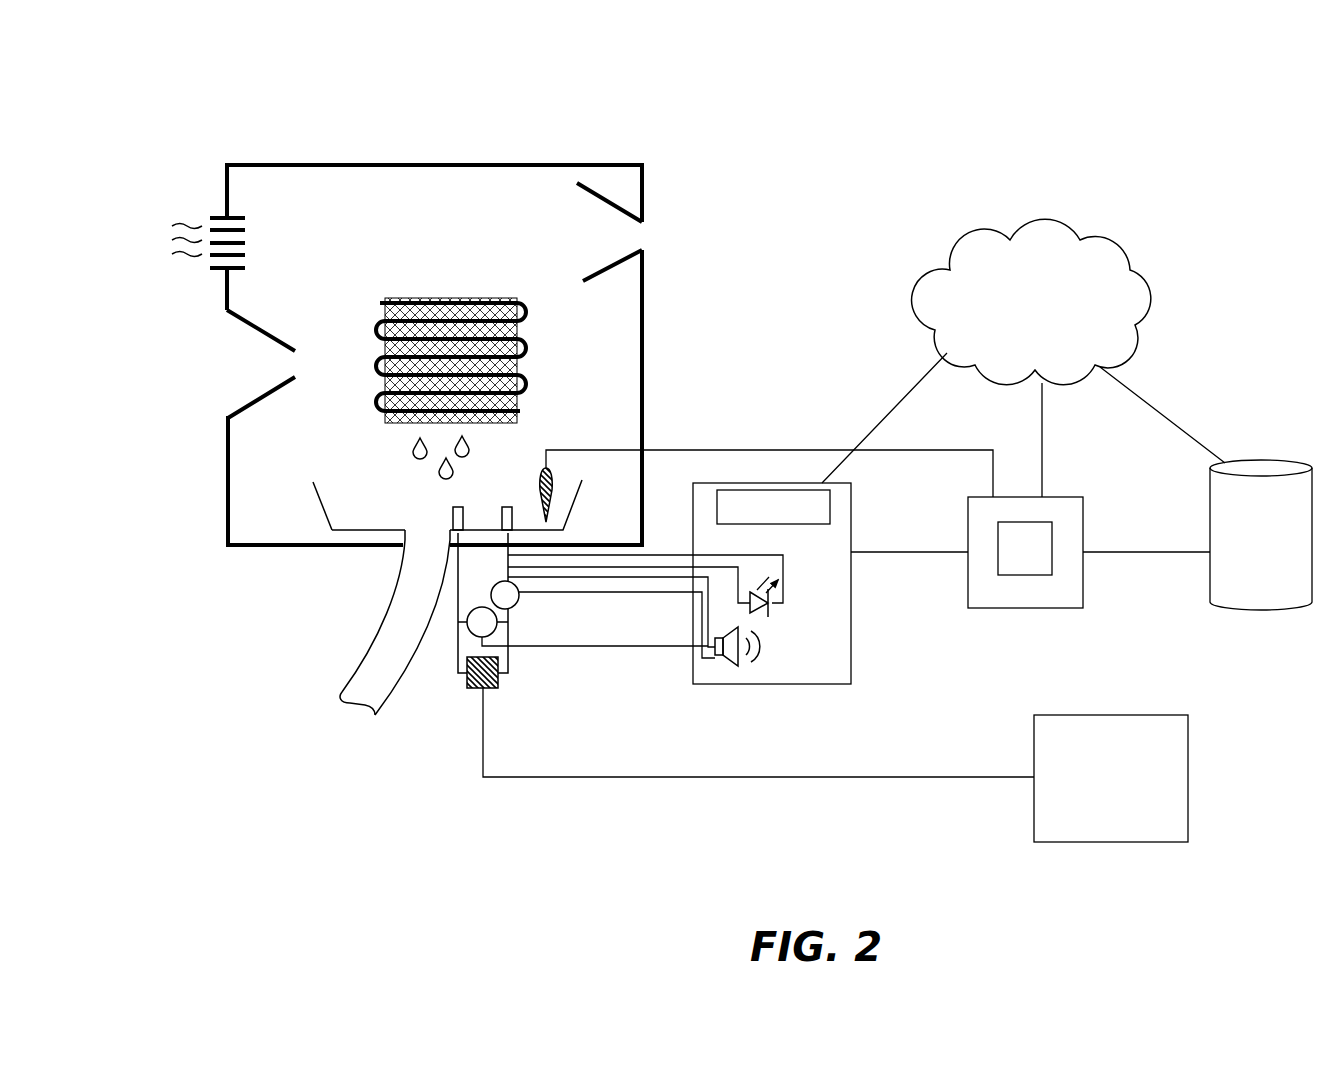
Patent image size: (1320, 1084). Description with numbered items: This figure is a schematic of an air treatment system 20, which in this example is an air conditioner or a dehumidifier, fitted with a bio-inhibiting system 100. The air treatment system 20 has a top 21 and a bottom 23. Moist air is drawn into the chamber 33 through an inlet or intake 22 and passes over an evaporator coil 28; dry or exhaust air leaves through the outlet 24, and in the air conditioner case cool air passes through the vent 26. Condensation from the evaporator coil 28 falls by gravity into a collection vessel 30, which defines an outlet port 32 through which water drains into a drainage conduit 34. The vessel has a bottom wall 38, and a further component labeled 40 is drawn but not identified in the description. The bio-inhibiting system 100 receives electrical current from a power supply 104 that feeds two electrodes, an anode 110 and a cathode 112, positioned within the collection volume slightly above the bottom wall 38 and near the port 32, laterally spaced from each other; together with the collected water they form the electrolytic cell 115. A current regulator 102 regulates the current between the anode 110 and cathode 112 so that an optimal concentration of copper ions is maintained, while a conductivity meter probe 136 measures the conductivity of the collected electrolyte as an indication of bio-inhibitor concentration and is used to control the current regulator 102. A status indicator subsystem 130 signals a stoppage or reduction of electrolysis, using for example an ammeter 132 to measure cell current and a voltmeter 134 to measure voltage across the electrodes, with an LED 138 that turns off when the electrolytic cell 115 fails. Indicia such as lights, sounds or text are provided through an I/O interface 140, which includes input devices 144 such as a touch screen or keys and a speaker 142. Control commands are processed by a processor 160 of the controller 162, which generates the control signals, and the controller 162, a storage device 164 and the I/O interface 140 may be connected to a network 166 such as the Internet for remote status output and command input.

The air treatment system 20 is at (572, 118).
The top 21 is at (314, 141).
The inlet or intake 22 is at (231, 381).
The bottom 23 is at (295, 574).
The outlet 24 is at (648, 235).
The vent 26 is at (158, 240).
The evaporator coil 28 is at (470, 297).
The collection vessel 30 is at (313, 483).
The outlet port 32 is at (425, 540).
The chamber 33 is at (380, 210).
The drainage conduit 34 is at (379, 639).
The bottom wall 38 is at (372, 530).
The pan bottom 40 is at (315, 516).
The bio-inhibiting system 100 is at (543, 852).
The current regulator 102 is at (478, 690).
The power supply 104 is at (1125, 716).
The anode 110 is at (461, 505).
The cathode 112 is at (516, 517).
The electrolytic cell 115 is at (485, 490).
The status indicator subsystem 130 is at (796, 442).
The ammeter 132 is at (514, 606).
The voltmeter 134 is at (474, 634).
The conductivity meter probe 136 is at (557, 482).
The LED 138 is at (773, 604).
The I/O interface 140 is at (830, 518).
The speaker 142 is at (782, 638).
The input devices 144 is at (833, 508).
The processor 160 is at (1089, 522).
The controller 162 is at (990, 608).
The storage device 164 is at (1206, 488).
The network 166 is at (1031, 301).